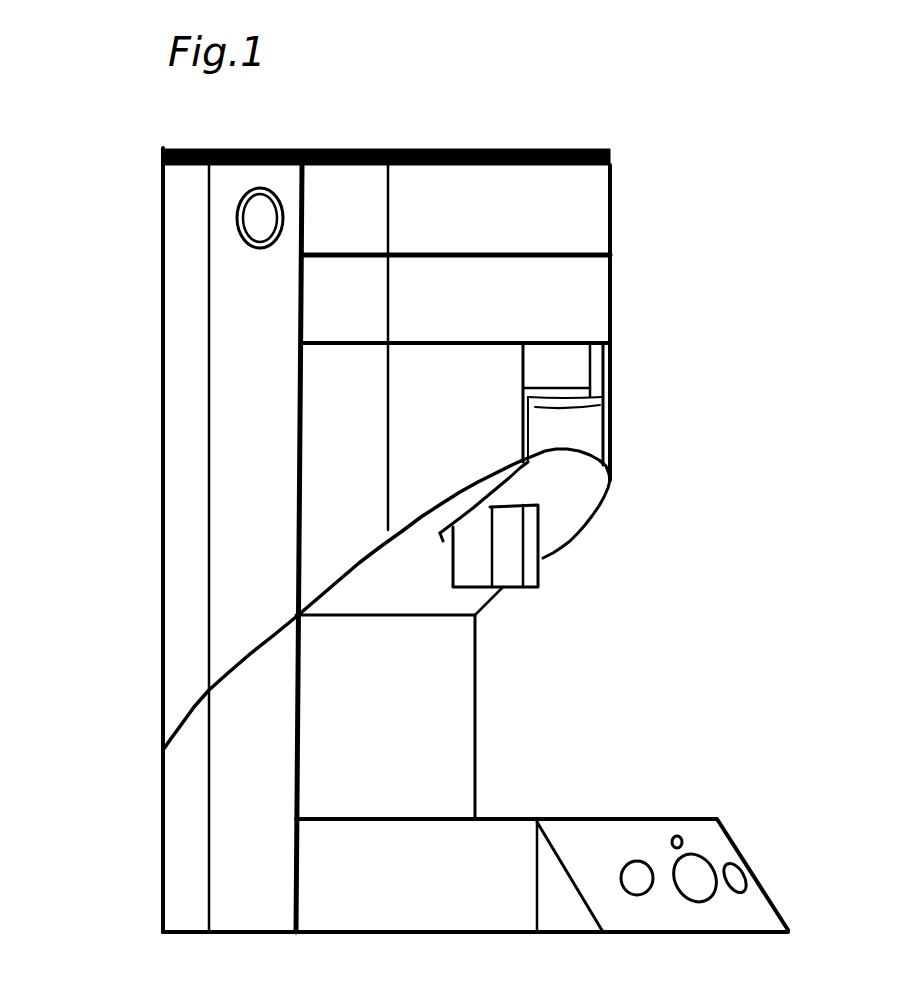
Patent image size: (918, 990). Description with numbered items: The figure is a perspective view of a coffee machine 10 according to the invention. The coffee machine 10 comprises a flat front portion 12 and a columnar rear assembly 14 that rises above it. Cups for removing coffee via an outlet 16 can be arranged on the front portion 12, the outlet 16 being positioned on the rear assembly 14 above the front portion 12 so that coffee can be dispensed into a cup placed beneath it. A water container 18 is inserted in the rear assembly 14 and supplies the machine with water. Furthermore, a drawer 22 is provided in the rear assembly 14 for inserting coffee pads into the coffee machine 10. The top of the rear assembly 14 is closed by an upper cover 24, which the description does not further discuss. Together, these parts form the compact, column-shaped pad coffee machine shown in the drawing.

The coffee machine 10 is at (80, 150).
The flat front portion 12 is at (742, 850).
The columnar rear assembly 14 is at (610, 198).
The outlet 16 is at (538, 575).
The water container 18 is at (162, 412).
The drawer 22 is at (610, 293).
The top cover 24 is at (565, 152).